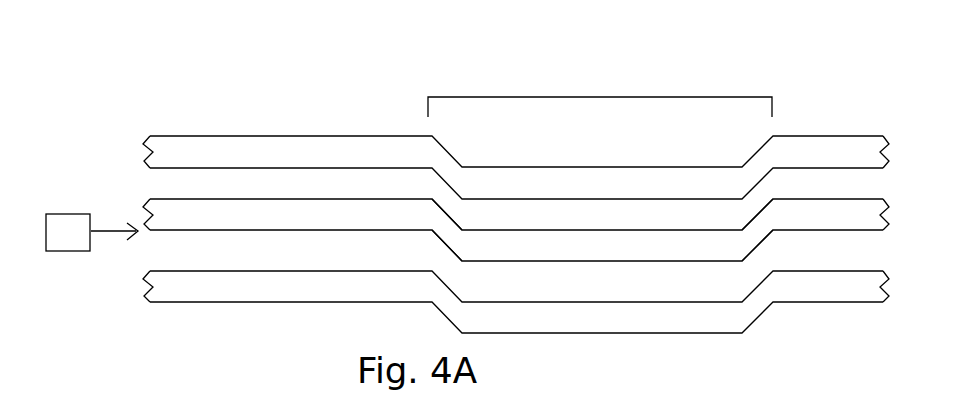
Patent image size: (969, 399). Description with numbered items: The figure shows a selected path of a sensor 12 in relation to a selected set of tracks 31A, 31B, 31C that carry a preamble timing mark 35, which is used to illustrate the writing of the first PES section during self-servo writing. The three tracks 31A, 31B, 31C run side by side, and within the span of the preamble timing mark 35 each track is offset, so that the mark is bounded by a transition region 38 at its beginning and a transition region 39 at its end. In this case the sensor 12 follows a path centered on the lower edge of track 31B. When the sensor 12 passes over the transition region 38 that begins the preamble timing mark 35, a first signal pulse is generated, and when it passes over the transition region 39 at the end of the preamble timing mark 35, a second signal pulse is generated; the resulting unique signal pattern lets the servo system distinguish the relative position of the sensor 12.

The sensor 12 is at (69, 219).
The preamble timing mark 35 is at (600, 95).
The track 31A is at (820, 160).
The track 31B is at (822, 224).
The track 31C is at (820, 293).
The transition region 38 is at (445, 233).
The transition region 39 is at (755, 237).